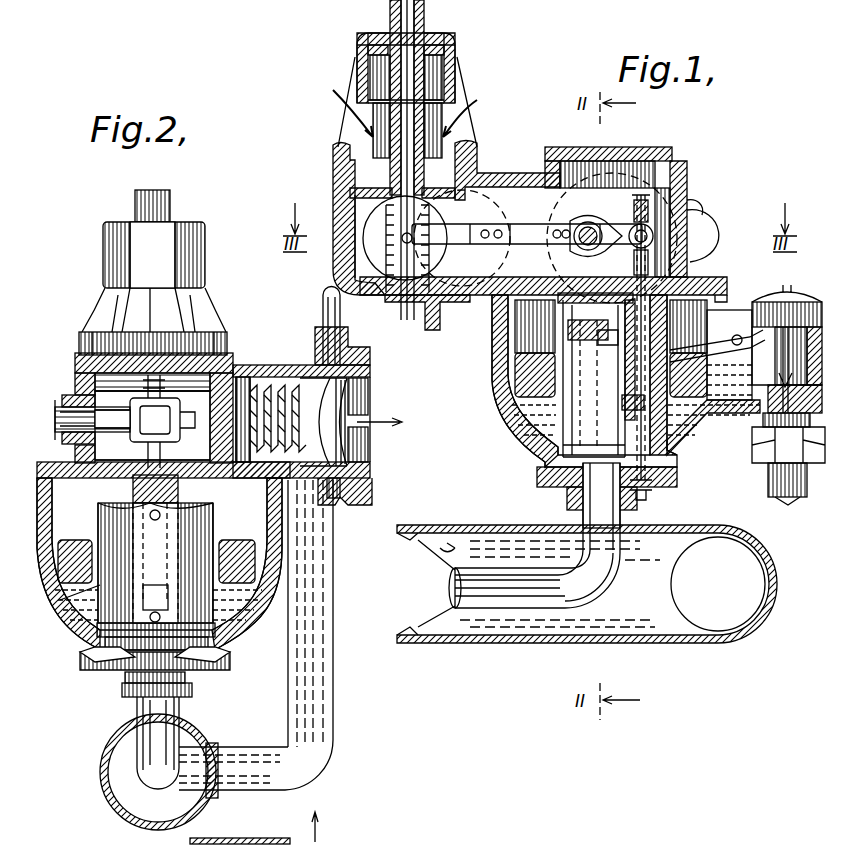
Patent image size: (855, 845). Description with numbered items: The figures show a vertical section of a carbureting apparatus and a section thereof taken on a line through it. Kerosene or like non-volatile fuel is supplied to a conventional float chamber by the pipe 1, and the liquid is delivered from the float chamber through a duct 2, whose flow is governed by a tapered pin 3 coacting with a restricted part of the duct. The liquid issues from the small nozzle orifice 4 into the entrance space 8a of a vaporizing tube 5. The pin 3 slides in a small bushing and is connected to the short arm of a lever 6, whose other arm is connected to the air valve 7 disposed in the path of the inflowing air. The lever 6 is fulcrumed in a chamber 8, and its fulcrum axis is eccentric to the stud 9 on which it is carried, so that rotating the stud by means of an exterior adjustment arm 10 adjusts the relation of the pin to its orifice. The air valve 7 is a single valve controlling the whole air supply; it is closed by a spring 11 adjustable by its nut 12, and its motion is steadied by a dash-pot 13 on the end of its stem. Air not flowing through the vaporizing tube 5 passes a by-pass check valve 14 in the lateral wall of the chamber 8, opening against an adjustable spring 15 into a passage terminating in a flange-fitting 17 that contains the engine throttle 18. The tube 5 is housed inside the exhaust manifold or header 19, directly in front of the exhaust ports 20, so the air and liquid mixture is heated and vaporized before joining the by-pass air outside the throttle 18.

In FIG. 1, the pipe 1 is at (768, 485).
In FIG. 2, the duct 2 is at (195, 622).
In FIG. 1, the duct 2 is at (615, 352).
In FIG. 1, the pin 3 is at (626, 405).
In FIG. 1, the nozzle orifice 4 is at (612, 338).
In FIG. 2, the vaporizing tube 5 is at (162, 748).
In FIG. 1, the vaporizing tube 5 is at (583, 517).
In FIG. 2, the lever 6 is at (172, 426).
In FIG. 1, the lever 6 is at (655, 236).
In FIG. 1, the air valve 7 is at (470, 170).
In FIG. 2, the chamber 8 is at (78, 498).
In FIG. 1, the chamber 8 is at (544, 238).
In FIG. 2, the entrance space 8a is at (108, 598).
In FIG. 1, the entrance space 8a is at (556, 405).
In FIG. 2, the stud 9 is at (90, 425).
In FIG. 1, the stud 9 is at (592, 234).
In FIG. 2, the adjustment arm 10 is at (62, 388).
In FIG. 1, the spring 11 is at (372, 247).
In FIG. 1, the nut 12 is at (437, 330).
In FIG. 2, the dash-pot 13 is at (103, 243).
In FIG. 1, the dash-pot 13 is at (455, 65).
In FIG. 2, the by-pass check valve 14 is at (243, 380).
In FIG. 1, the by-pass check valve 14 is at (365, 230).
In FIG. 2, the adjustable spring 15 is at (268, 395).
In FIG. 2, the flange-fitting 17 is at (352, 487).
In FIG. 1, the flange-fitting 17 is at (698, 212).
In FIG. 2, the throttle 18 is at (335, 462).
In FIG. 2, the manifold or header 19 is at (101, 790).
In FIG. 1, the manifold or header 19 is at (580, 641).
In FIG. 1, the exhaust ports 20 is at (452, 538).